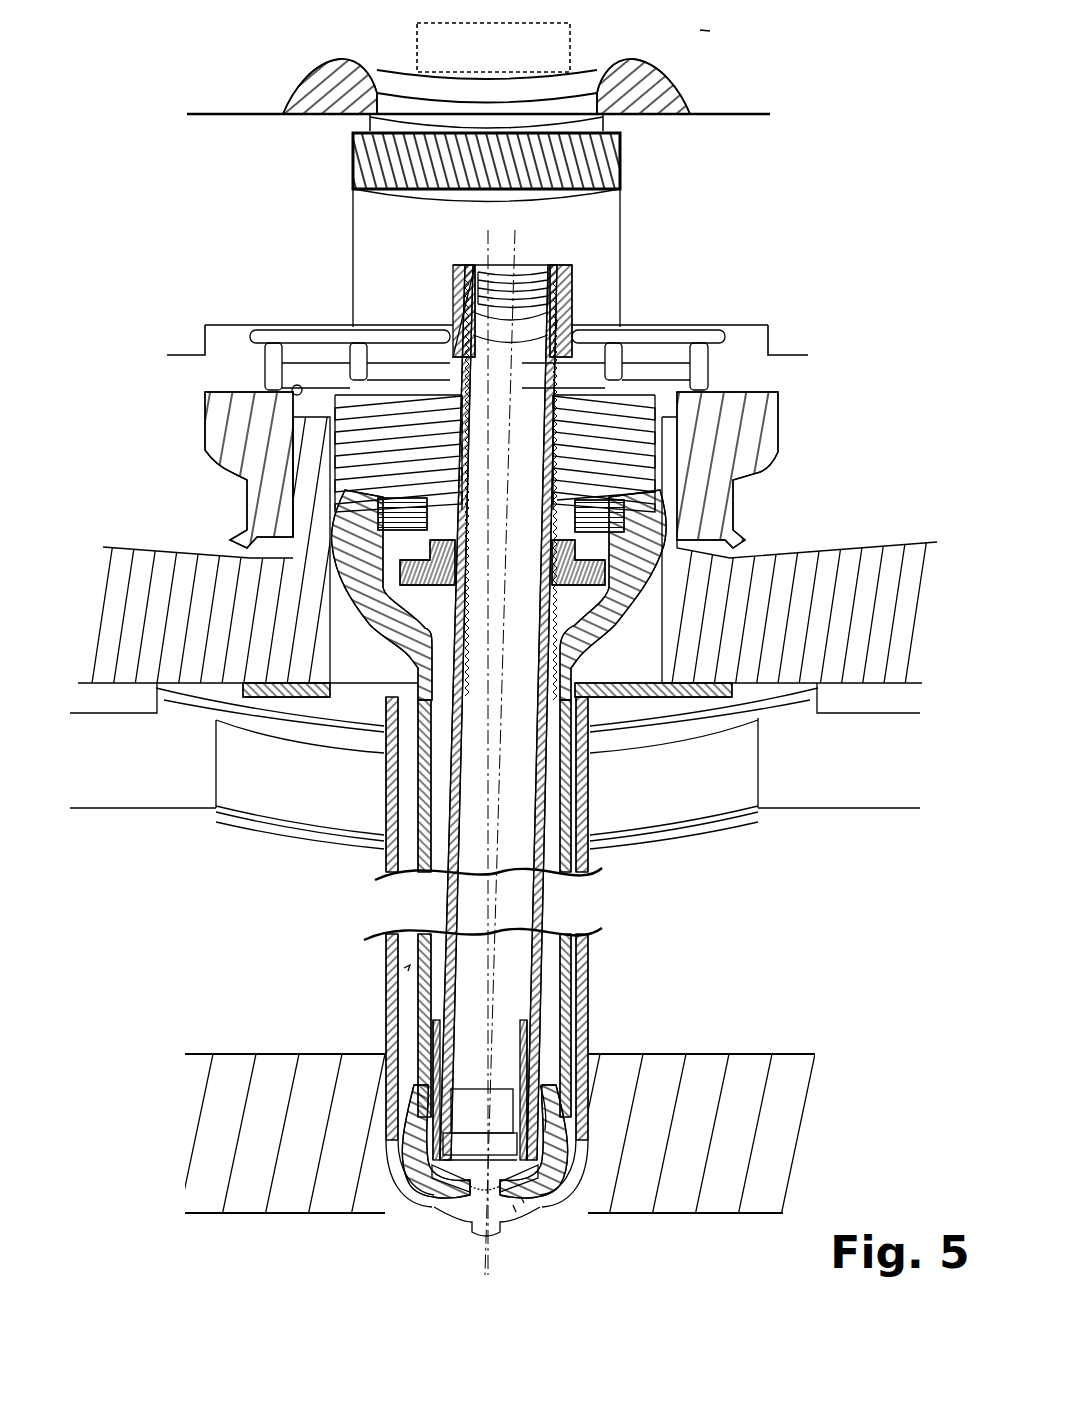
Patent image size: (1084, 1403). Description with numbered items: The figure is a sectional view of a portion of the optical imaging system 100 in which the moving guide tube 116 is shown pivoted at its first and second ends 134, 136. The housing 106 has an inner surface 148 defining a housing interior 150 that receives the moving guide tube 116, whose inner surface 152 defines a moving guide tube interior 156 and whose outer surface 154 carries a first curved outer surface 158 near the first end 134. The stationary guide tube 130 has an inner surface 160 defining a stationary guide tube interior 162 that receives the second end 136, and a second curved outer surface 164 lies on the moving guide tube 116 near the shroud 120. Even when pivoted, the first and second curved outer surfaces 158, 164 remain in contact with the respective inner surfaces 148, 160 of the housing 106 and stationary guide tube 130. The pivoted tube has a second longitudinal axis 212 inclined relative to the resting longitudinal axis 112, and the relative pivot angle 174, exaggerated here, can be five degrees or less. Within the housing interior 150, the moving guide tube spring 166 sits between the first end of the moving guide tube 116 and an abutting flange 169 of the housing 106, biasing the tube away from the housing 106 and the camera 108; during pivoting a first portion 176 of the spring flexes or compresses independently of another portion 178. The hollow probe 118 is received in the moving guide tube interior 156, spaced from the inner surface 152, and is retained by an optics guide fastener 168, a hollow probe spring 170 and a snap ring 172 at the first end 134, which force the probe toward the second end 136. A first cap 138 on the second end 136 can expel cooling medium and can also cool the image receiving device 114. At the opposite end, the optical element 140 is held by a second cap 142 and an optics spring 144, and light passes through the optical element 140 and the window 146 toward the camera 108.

The optical imaging system 100 is at (880, 72).
The housing 106 is at (230, 413).
The camera 108 is at (477, 62).
The longitudinal axis 112 is at (489, 1234).
The image receiving device 114 is at (451, 1184).
The moving guide tube 116 is at (618, 666).
The hollow probe 118 is at (554, 1000).
The shroud 120 is at (228, 1087).
The stationary guide tube 130 is at (585, 955).
The first end 134 is at (615, 630).
The second end 136 is at (513, 1210).
The first cap 138 is at (521, 1198).
The optical element 140 is at (557, 320).
The second cap 142 is at (515, 310).
The optics spring 144 is at (560, 276).
The window 146 is at (520, 153).
The inner surface 148 is at (337, 647).
The housing interior 150 is at (387, 688).
The inner surface 152 is at (240, 830).
The outer surface 154 is at (405, 663).
The moving guide tube interior 156 is at (381, 872).
The first curved outer surface 158 is at (205, 452).
The inner surface 160 is at (397, 1164).
The stationary guide tube interior 162 is at (409, 969).
The second curved outer surface 164 is at (562, 1098).
The moving guide tube spring 166 is at (335, 415).
The optics guide fastener 168 is at (410, 553).
The abutting flange 169 is at (362, 400).
The hollow probe spring 170 is at (658, 525).
The snap ring 172 is at (515, 270).
The relative pivot angle 174 is at (478, 1244).
The first portion 176 is at (380, 498).
The another portion 178 is at (593, 433).
The second longitudinal axis 212 is at (469, 1229).